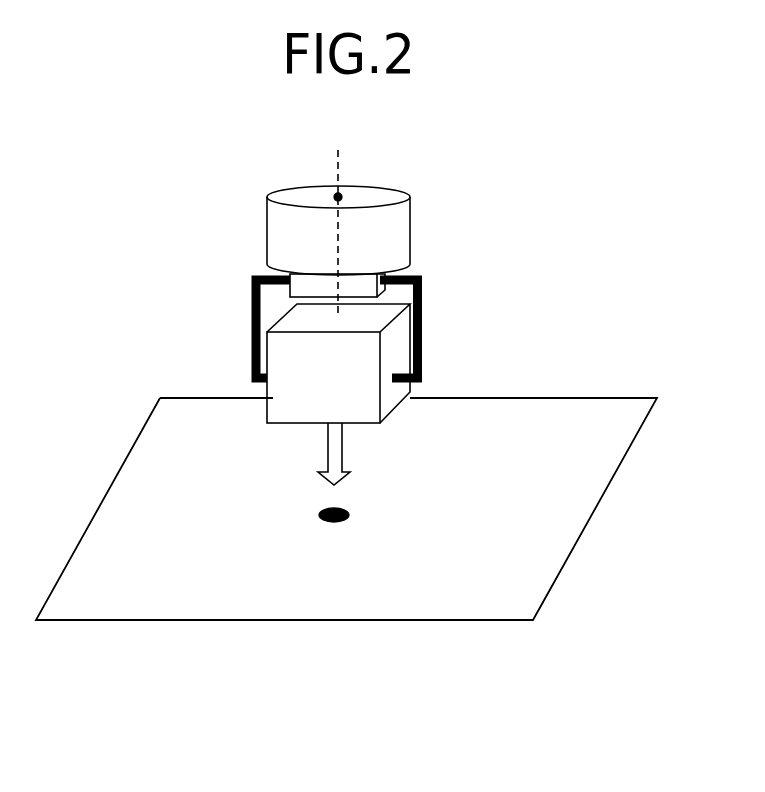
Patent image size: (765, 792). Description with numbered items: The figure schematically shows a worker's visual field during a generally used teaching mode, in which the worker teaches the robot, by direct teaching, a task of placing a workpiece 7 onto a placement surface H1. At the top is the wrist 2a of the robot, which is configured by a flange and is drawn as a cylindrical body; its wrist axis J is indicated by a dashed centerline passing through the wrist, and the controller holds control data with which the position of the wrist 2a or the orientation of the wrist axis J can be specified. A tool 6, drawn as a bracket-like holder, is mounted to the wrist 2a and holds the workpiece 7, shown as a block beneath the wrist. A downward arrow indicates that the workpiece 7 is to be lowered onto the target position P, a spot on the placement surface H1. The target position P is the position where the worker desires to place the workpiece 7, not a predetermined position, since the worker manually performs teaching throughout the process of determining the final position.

The wrist axis J is at (334, 212).
The wrist 2a is at (407, 243).
The tool 6 is at (423, 302).
The workpiece 7 is at (392, 412).
The target position P is at (349, 515).
The placement surface H1 is at (222, 620).